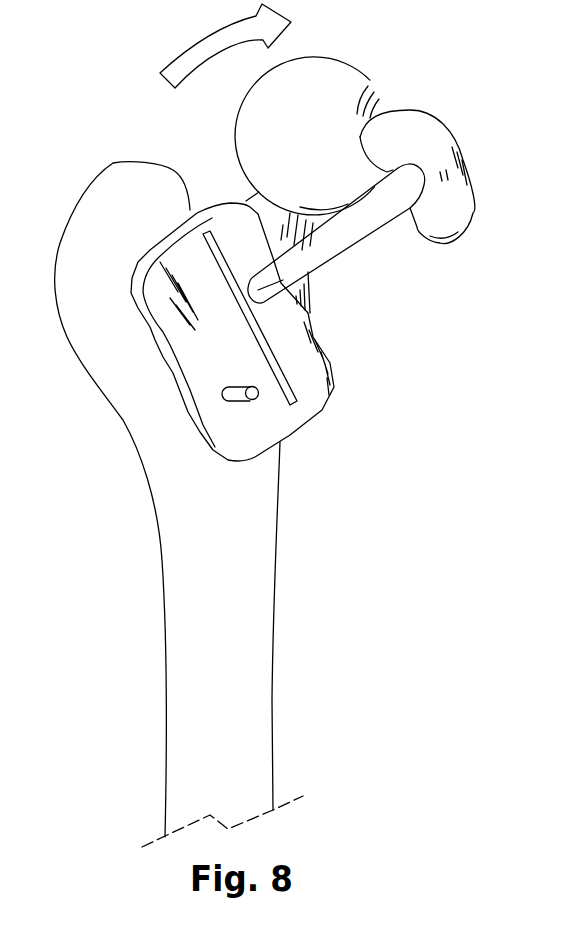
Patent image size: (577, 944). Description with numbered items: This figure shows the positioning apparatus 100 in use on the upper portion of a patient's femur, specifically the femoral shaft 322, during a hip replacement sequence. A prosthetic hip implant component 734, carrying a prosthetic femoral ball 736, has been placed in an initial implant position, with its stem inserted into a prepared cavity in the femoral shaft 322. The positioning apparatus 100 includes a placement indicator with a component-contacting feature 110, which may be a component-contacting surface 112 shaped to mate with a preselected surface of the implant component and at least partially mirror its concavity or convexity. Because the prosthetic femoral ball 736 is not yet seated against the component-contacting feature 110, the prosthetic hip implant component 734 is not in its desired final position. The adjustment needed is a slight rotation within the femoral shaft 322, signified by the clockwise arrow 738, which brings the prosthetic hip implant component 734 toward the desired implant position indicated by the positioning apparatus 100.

The clockwise arrow 738 is at (180, 57).
The prosthetic hip implant component 734 is at (214, 149).
The prosthetic femoral ball 736 is at (367, 82).
The component-contacting feature 110 is at (445, 155).
The component-contacting surface 112 is at (442, 210).
The positioning apparatus 100 is at (325, 414).
The femoral shaft 322 is at (283, 549).